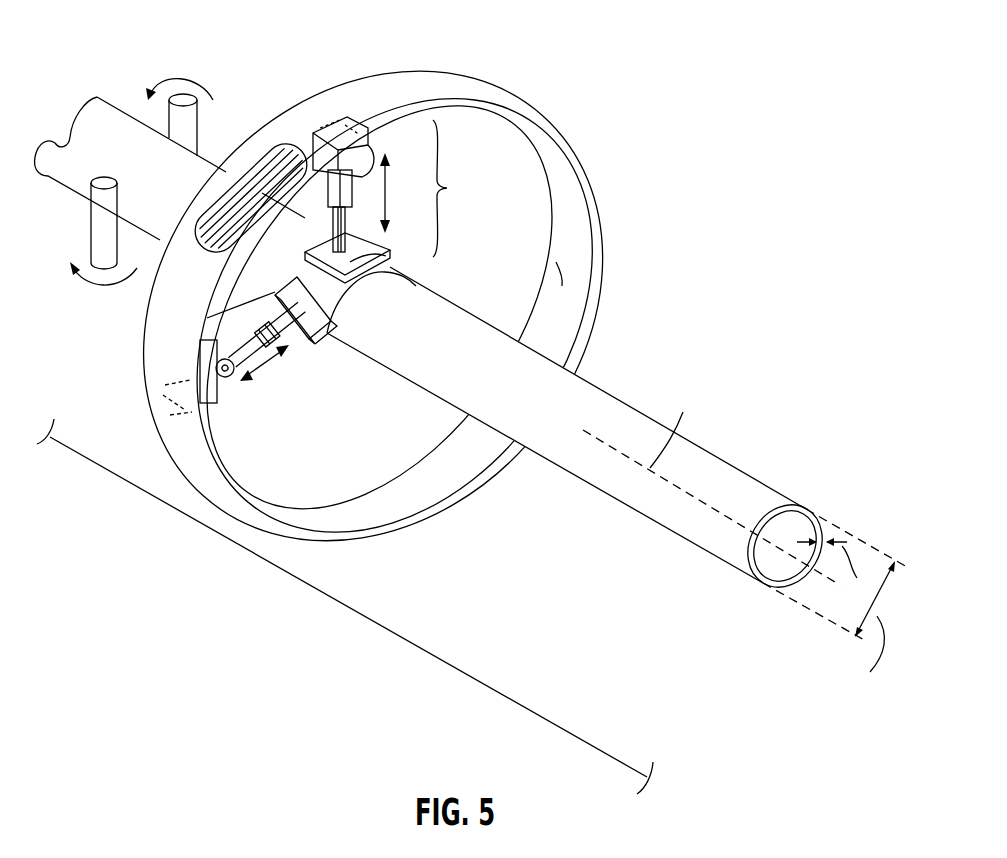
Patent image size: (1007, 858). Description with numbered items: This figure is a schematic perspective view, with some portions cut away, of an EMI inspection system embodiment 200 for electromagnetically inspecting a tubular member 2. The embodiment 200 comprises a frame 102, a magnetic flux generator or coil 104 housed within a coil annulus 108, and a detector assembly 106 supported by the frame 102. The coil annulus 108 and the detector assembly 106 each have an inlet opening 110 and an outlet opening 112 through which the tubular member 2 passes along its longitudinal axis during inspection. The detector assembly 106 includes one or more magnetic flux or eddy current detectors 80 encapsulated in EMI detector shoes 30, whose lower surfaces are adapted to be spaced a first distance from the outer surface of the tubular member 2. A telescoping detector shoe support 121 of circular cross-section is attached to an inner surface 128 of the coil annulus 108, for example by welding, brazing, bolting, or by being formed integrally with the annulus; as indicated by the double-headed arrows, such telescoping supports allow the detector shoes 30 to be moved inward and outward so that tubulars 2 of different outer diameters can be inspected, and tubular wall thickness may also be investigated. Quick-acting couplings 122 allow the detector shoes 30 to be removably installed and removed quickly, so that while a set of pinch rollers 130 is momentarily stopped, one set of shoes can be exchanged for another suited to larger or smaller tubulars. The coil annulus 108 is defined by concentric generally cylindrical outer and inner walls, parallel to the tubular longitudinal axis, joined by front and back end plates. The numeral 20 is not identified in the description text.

The tubular member 2 is at (782, 494).
The actuator block 20 is at (373, 142).
The EMI detector shoe 30 is at (402, 278).
The magnetic flux or eddy current detector 80 is at (327, 307).
The frame 102 is at (550, 725).
The magnetic flux generator (coil) 104 is at (266, 165).
The detector assembly 106 is at (207, 318).
The coil annulus 108 is at (472, 92).
The inlet opening 110 is at (311, 227).
The outlet opening 112 is at (527, 217).
The detector shoe support 121 is at (230, 376).
The quick-acting coupling 122 is at (304, 254).
The inner surface of coil annulus 128 is at (563, 272).
The pinch rollers 130 is at (165, 120).
The EMI inspection system embodiment 200 is at (766, 32).